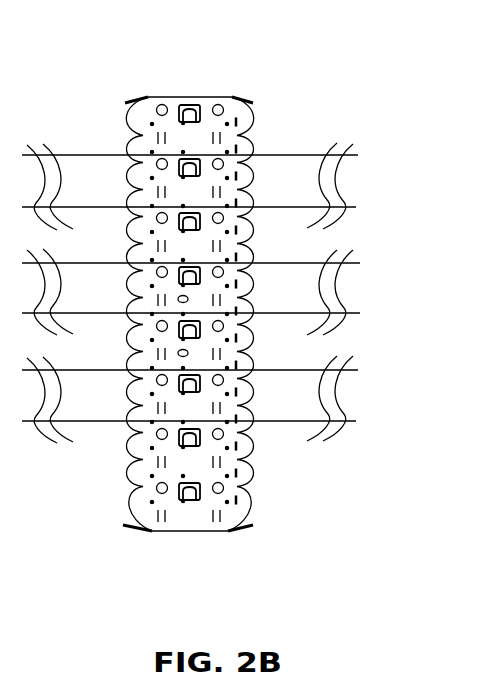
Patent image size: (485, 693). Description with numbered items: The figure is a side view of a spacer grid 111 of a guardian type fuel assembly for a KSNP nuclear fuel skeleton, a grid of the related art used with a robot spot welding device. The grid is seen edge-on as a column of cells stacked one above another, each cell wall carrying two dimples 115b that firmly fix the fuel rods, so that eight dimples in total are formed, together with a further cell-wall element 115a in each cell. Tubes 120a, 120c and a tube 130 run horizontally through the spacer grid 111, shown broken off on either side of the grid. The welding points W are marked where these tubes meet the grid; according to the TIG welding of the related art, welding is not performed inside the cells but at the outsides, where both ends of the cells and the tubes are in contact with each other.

The spacer grid 111 is at (348, 73).
The first holding portion 115a is at (183, 105).
The dimple 115b is at (221, 137).
The welding point W is at (143, 152).
The third wire portion 120c is at (352, 142).
The tube 130 is at (315, 262).
The first wire portion 120a is at (352, 355).